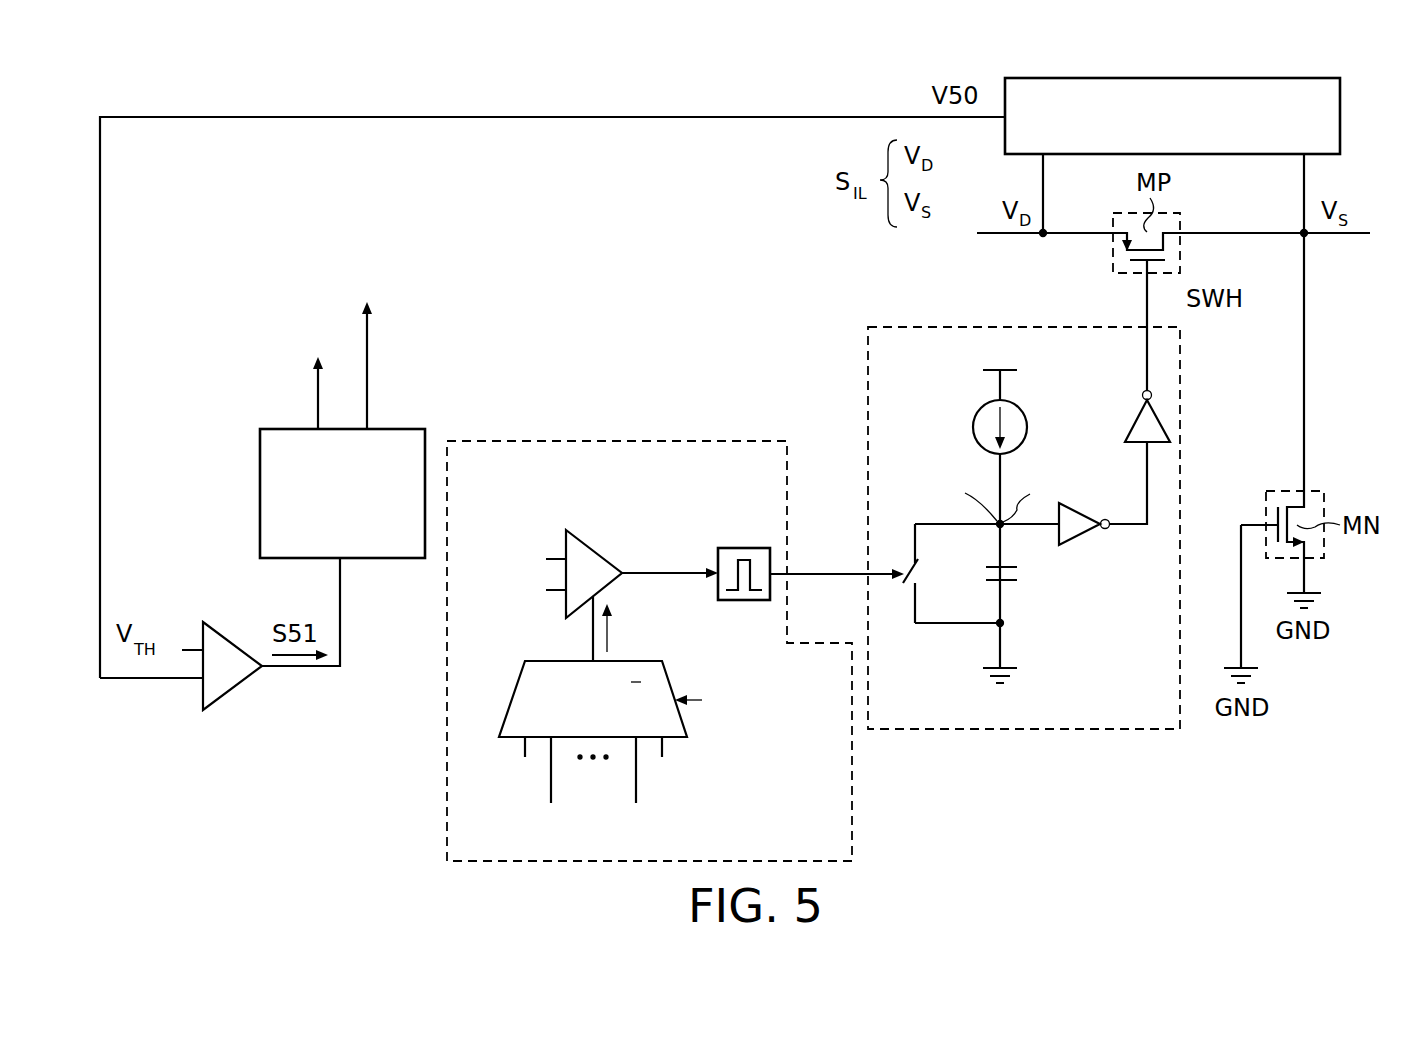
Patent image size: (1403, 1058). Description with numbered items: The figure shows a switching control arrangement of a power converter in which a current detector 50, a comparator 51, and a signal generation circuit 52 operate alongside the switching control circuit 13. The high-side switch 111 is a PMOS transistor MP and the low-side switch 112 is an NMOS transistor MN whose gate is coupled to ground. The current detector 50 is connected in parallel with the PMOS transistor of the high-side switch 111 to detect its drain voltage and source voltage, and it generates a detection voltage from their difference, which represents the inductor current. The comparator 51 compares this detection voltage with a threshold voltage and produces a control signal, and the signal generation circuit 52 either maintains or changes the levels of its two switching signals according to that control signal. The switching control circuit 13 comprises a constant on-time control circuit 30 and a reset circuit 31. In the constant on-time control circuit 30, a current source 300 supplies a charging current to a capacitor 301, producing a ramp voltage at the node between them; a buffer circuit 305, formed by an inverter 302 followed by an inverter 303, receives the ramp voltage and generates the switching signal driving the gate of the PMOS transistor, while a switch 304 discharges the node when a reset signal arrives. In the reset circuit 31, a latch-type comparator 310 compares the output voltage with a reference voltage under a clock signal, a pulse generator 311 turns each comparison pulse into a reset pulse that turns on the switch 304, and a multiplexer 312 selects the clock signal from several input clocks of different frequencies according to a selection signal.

The switching control circuit 13 is at (650, 370).
The constant on-time (COT) control circuit 30 is at (868, 327).
The reset circuit 31 is at (447, 441).
The current detector 50 is at (1340, 117).
The comparator 51 is at (233, 640).
The signal generation circuit 52 is at (260, 429).
The high-side switch 111 is at (1113, 222).
The low-side switch 112 is at (1318, 491).
The current source 300 is at (976, 411).
The capacitor 301 is at (1019, 574).
The inverter 302 is at (1096, 494).
The inverter 303 is at (1125, 430).
The switch 304 is at (918, 574).
The buffer circuit 305 is at (1111, 563).
The latch-type comparator 310 is at (595, 545).
The pulse generator 311 is at (745, 548).
The multiplexer 312 is at (675, 677).